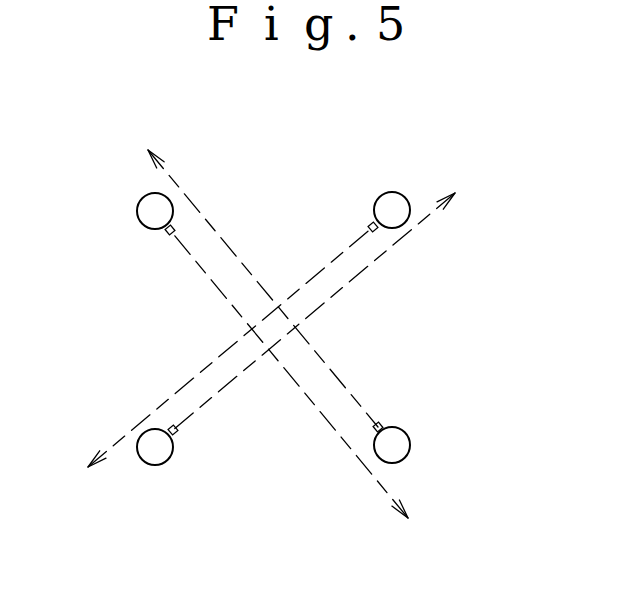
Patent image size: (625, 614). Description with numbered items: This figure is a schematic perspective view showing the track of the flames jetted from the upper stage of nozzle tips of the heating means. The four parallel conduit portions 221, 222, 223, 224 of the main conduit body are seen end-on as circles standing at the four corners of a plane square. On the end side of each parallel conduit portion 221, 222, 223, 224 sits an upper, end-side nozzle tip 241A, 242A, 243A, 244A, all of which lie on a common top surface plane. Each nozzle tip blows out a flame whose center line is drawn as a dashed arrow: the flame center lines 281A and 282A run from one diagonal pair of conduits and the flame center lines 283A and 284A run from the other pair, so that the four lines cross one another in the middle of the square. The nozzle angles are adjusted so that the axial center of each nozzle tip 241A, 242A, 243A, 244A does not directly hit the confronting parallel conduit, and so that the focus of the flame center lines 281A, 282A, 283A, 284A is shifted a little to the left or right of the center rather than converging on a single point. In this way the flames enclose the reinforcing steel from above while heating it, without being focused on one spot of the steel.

The parallel conduit portion 221 is at (412, 445).
The parallel conduit portion 222 is at (397, 193).
The parallel conduit portion 223 is at (137, 208).
The parallel conduit portion 224 is at (153, 465).
The end side nozzle tip 241A is at (382, 423).
The end side nozzle tip 242A is at (372, 225).
The end side nozzle tip 243A is at (167, 236).
The end side nozzle tip 244A is at (177, 437).
The flame center line 281A is at (209, 218).
The flame center line 282A is at (165, 400).
The flame center line 283A is at (369, 464).
The flame center line 284A is at (403, 238).